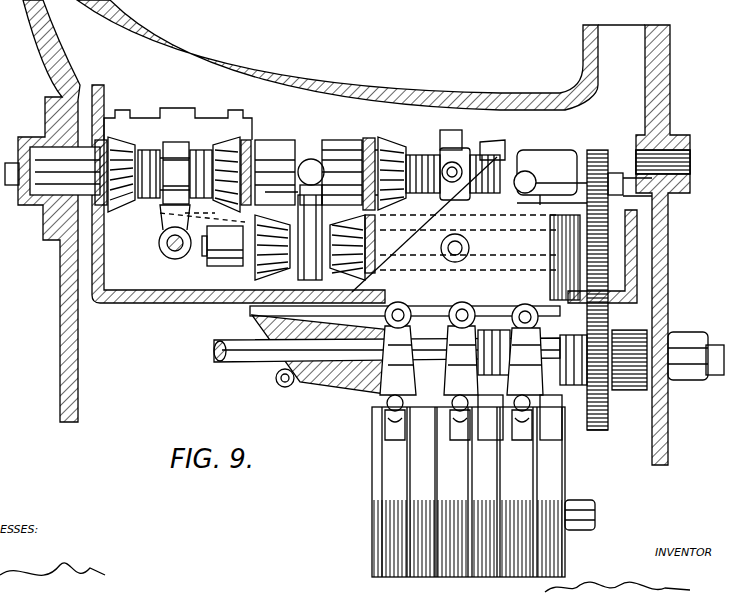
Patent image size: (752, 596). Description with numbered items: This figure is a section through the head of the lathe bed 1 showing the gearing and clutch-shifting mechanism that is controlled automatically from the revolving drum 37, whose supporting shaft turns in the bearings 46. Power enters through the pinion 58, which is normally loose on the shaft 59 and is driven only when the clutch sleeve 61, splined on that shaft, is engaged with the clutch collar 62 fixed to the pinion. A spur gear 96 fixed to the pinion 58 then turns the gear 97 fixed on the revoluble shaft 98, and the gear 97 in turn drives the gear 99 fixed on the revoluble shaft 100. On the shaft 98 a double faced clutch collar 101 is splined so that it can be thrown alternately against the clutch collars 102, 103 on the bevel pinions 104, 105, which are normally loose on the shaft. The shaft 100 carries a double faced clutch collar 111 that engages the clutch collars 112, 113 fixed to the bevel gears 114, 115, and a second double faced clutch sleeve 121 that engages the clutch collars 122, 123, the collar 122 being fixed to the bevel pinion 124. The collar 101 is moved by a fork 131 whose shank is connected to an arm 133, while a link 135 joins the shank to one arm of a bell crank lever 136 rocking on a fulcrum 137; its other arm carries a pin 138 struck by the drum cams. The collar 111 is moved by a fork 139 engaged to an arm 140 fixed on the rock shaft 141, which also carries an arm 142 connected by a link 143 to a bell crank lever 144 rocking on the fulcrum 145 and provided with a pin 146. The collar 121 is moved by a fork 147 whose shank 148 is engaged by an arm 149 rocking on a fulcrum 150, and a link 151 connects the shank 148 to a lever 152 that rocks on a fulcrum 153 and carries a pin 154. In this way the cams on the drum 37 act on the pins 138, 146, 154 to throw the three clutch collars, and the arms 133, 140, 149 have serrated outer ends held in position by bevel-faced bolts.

The lathe bed 1 is at (60, 350).
The revolving drum 37 is at (385, 492).
The bearings 46 is at (596, 508).
The pinion 58 is at (634, 330).
The shaft 59 is at (234, 362).
The clutch sleeve 61 is at (490, 405).
The clutch collar 62 is at (550, 396).
The spur gear 96 is at (602, 432).
The gear 97 is at (640, 225).
The revoluble shaft 98 is at (206, 255).
The gear 99 is at (602, 150).
The revoluble shaft 100 is at (311, 160).
The double faced clutch collar 101 is at (332, 278).
The clutch collar 102 is at (336, 188).
The clutch collar 103 is at (276, 182).
The bevel pinion 104 is at (342, 162).
The bevel pinion 105 is at (273, 152).
The double faced clutch collar 111 is at (162, 150).
The clutch collar 112 is at (150, 148).
The clutch collar 113 is at (204, 150).
The bevel gear 114 is at (122, 136).
The bevel gear 115 is at (227, 138).
The double faced clutch sleeve 121 is at (480, 155).
The clutch collar 122 is at (398, 160).
The clutch collar 123 is at (502, 145).
The bevel pinion 124 is at (390, 138).
The fork 131 is at (292, 277).
The arm 133 is at (322, 160).
The link 135 is at (390, 303).
The bell crank lever 136 is at (450, 325).
The fulcrum 137 is at (462, 302).
The pin 138 is at (452, 418).
The fork 139 is at (178, 142).
The arm 140 is at (168, 228).
The rock shaft 141 is at (167, 246).
The arm 142 is at (170, 213).
The link 143 is at (250, 312).
The bell crank lever 144 is at (392, 362).
The fulcrum 145 is at (402, 312).
The pin 146 is at (384, 405).
The fork 147 is at (452, 130).
The shank 148 is at (454, 162).
The arm 149 is at (440, 208).
The fulcrum 150 is at (460, 246).
The link 151 is at (528, 170).
The lever 152 is at (533, 200).
The fulcrum 153 is at (528, 310).
The pin 154 is at (528, 418).